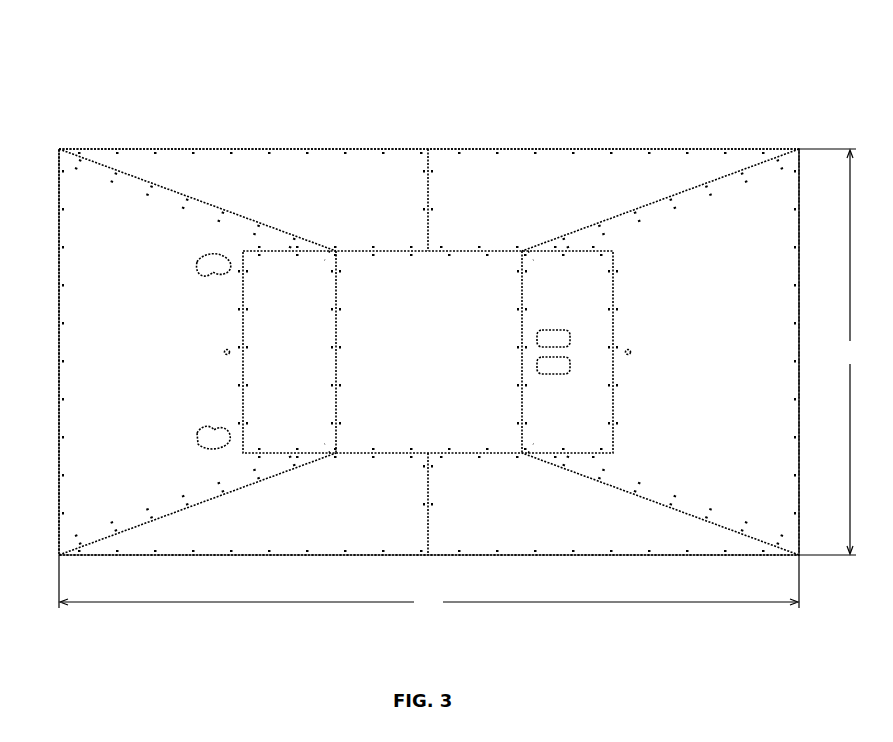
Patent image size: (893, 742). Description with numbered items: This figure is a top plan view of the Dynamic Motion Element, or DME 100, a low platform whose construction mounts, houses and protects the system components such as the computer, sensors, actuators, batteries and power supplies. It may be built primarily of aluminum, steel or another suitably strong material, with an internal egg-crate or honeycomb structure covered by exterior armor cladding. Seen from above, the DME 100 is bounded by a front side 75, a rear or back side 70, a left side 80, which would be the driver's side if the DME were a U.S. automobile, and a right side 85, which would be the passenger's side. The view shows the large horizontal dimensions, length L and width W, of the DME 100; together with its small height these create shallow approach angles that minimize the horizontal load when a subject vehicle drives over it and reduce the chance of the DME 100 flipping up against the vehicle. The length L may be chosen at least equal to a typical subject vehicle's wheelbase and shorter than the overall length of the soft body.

The Dynamic Motion Element 100 is at (191, 90).
The rear side 70 is at (800, 237).
The front side 75 is at (58, 298).
The left side 80 is at (538, 556).
The right side 85 is at (450, 149).